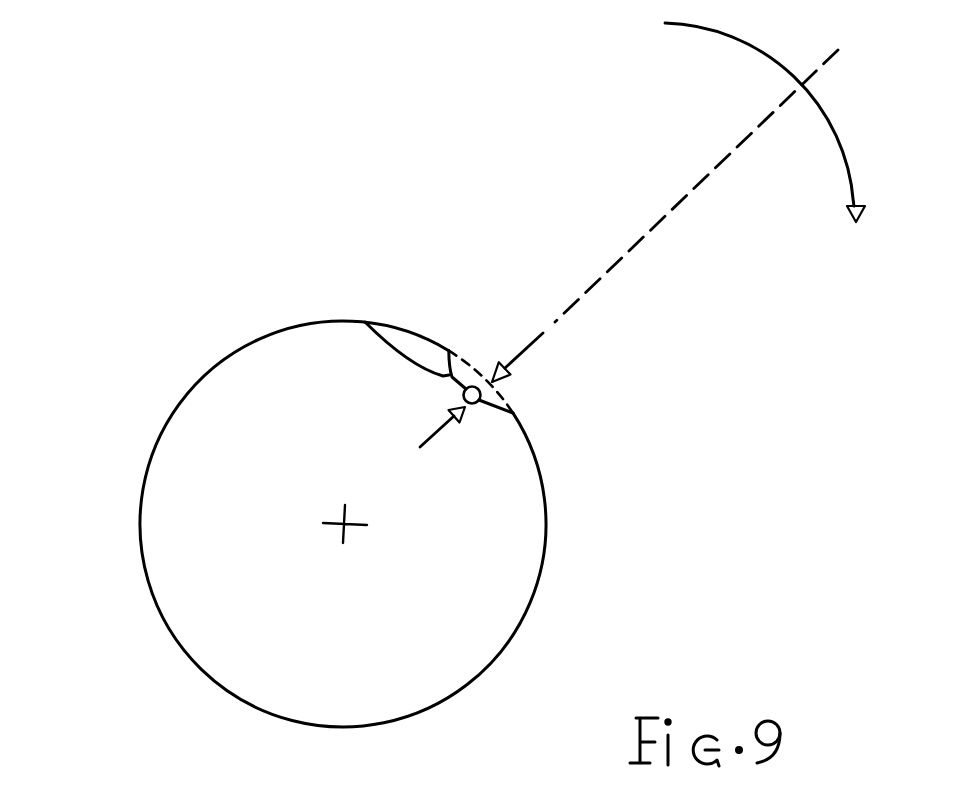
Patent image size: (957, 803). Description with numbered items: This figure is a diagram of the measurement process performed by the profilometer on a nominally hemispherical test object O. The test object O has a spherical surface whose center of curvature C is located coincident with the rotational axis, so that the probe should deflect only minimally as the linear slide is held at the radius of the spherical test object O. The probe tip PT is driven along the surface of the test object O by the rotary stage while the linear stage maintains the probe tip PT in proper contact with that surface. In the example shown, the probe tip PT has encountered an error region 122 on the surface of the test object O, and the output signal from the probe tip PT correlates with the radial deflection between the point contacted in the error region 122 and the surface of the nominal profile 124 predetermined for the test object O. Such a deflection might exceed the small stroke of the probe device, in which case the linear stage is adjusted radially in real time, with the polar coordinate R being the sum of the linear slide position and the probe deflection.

The error region 122 is at (365, 322).
The nominal profile 124 is at (468, 366).
The test object O is at (183, 393).
The center of curvature C is at (350, 530).
The probe tip PT is at (510, 416).
The polar coordinate R is at (690, 190).